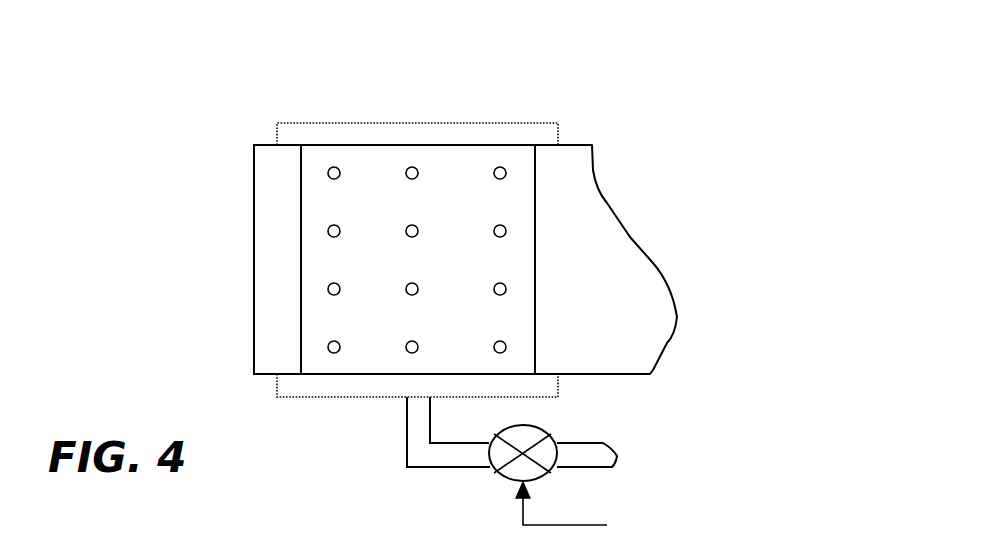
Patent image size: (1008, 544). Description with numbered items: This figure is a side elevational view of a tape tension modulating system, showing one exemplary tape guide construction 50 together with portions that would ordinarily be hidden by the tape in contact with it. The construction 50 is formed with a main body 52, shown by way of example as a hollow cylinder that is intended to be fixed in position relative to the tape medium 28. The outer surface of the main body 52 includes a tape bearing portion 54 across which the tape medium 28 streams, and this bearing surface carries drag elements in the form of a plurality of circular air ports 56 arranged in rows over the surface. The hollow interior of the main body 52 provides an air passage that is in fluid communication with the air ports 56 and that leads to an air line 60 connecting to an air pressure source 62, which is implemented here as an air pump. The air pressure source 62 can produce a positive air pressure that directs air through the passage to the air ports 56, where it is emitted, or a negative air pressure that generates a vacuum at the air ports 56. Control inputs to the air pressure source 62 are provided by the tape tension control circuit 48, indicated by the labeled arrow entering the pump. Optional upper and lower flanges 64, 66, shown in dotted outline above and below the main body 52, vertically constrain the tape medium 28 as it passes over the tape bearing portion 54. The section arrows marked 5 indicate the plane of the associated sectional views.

The tape medium 28 is at (617, 374).
The tape guide construction 50 is at (172, 140).
The main body 52 is at (536, 189).
The tape bearing portion 54 is at (452, 158).
The air ports 56 is at (337, 167).
The air line 60 is at (407, 422).
The air pressure source 62 is at (493, 473).
The upper flange 64 is at (301, 101).
The lower flange 66 is at (302, 397).
The tape tension control circuit 48 is at (639, 513).
The section line 5- 5 is at (208, 237).